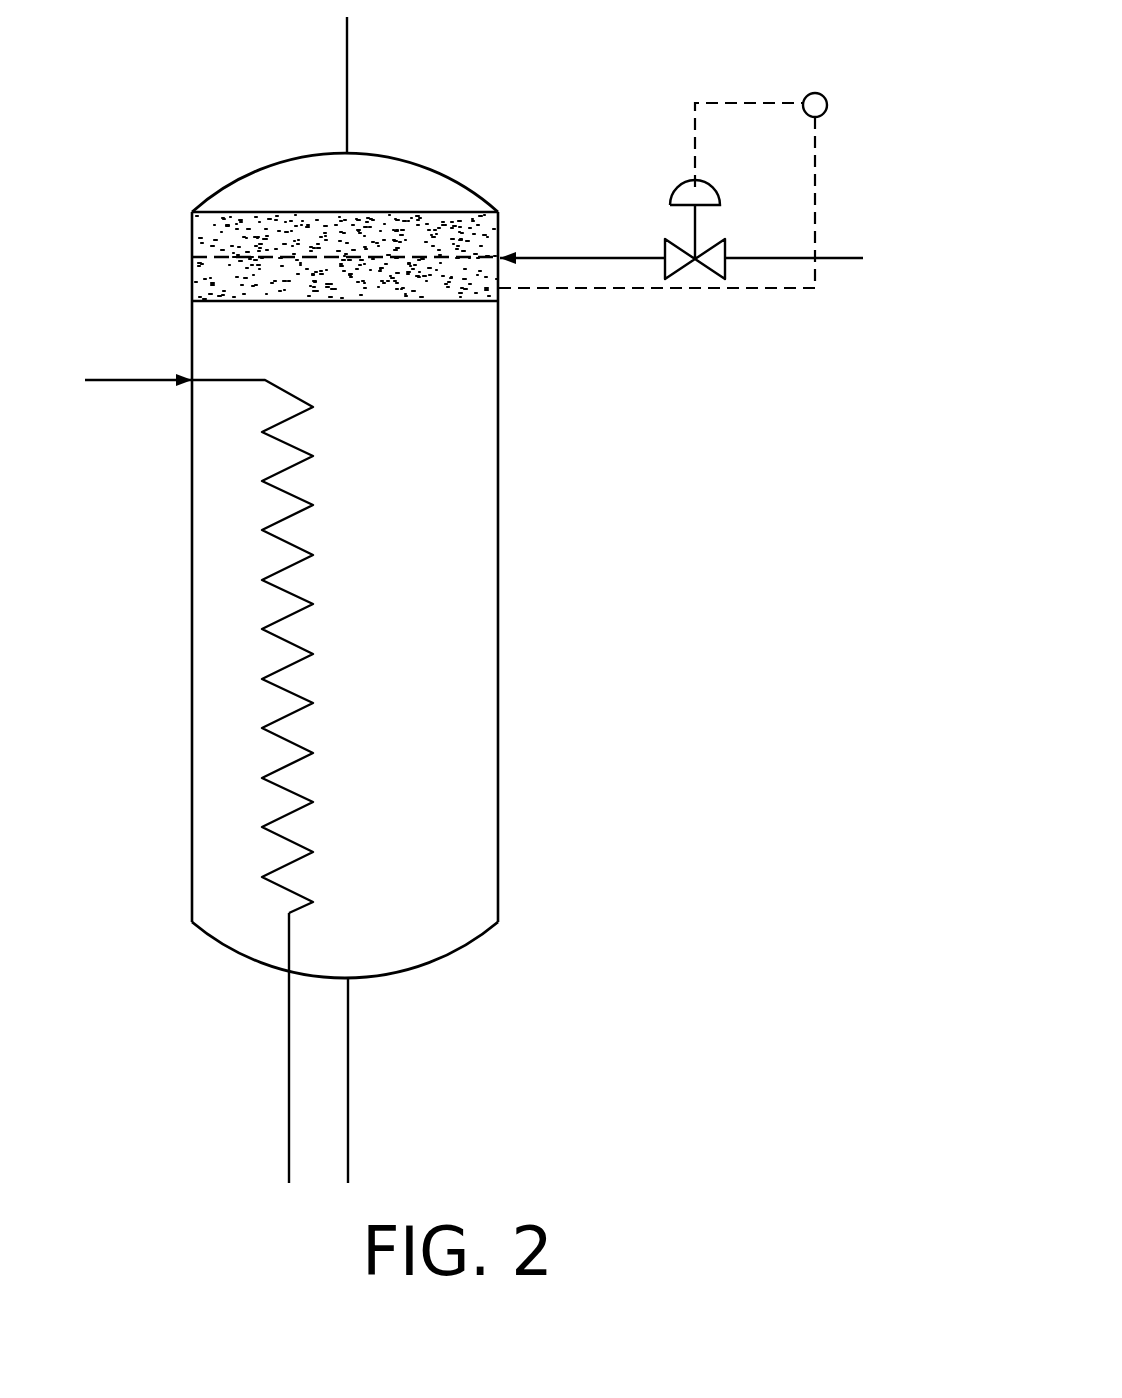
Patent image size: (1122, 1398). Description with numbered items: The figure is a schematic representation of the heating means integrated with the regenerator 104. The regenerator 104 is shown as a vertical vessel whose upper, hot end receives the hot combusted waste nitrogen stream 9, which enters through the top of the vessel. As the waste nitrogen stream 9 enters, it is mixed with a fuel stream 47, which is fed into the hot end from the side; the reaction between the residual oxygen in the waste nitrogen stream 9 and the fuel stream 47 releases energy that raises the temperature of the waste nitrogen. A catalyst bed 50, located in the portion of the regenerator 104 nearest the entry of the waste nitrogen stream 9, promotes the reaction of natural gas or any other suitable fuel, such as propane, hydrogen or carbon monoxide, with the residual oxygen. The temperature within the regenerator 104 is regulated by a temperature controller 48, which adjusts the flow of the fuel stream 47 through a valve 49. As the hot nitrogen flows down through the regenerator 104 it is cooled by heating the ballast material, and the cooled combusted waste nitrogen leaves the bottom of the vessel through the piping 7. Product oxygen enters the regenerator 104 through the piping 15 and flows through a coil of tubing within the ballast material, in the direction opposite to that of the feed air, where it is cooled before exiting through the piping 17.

The regenerator 104 is at (499, 585).
The catalyst bed 50 is at (203, 232).
The hot combusted waste nitrogen stream 9 is at (347, 82).
The piping 15 is at (112, 380).
The piping 17 is at (289, 1068).
The piping 7 is at (348, 1073).
The fuel stream 47 is at (572, 255).
The temperature controller 48 is at (827, 106).
The valve 49 is at (695, 262).